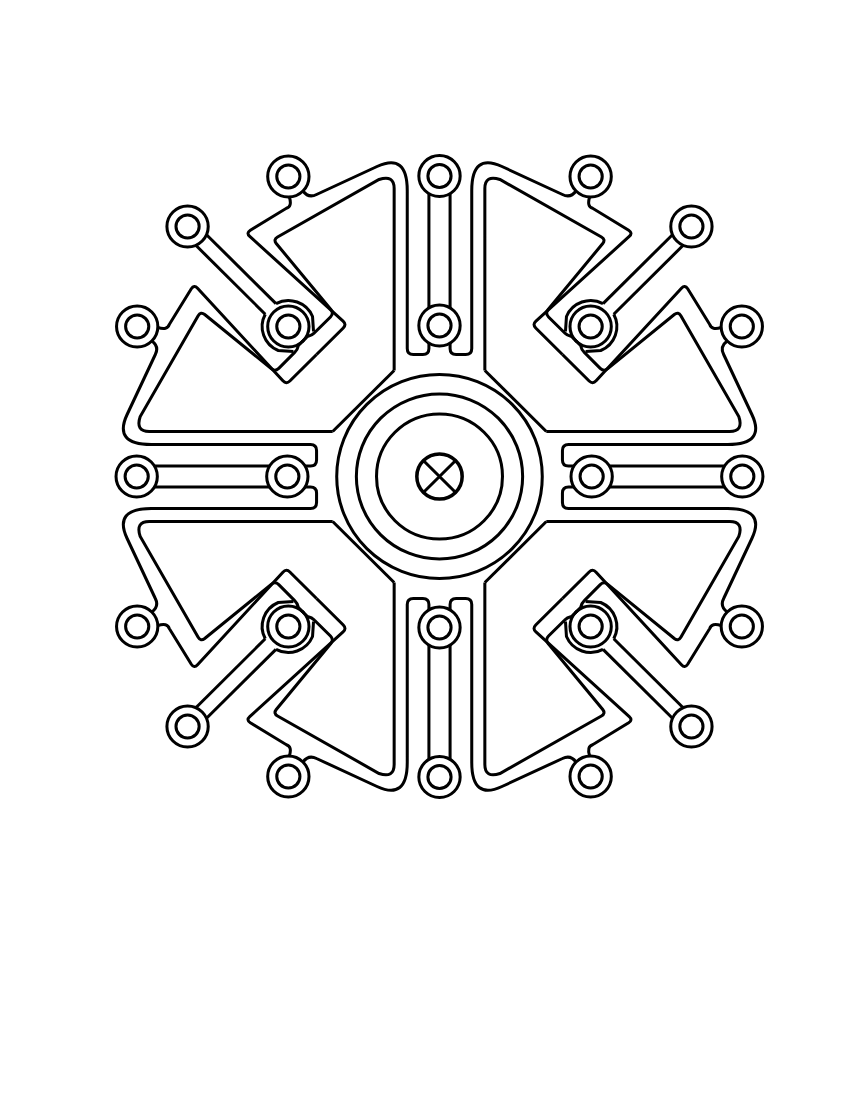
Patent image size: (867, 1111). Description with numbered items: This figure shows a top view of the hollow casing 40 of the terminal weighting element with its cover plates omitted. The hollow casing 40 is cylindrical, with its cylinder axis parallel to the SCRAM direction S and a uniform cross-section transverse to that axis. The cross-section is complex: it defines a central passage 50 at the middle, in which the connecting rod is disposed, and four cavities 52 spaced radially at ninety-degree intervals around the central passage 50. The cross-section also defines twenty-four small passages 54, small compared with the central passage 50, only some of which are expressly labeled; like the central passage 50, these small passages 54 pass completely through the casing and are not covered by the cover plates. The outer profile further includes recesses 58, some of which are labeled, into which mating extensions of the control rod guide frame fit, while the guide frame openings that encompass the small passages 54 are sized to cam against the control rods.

The hollow casing 40 is at (279, 72).
The central passage 50 is at (420, 443).
The cavities 52 is at (543, 476).
The small passages 54 is at (588, 327).
The recesses 58 is at (230, 476).